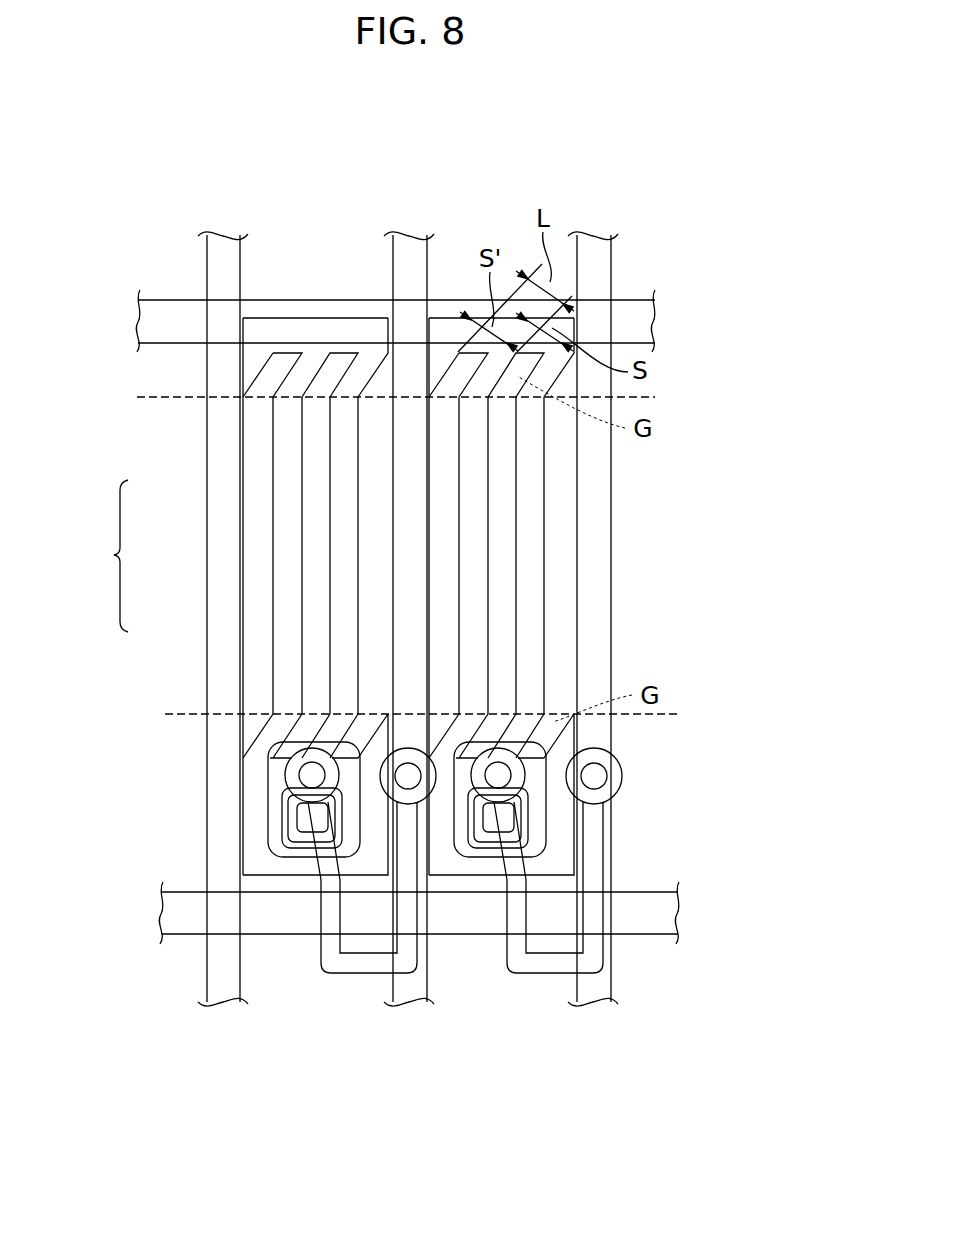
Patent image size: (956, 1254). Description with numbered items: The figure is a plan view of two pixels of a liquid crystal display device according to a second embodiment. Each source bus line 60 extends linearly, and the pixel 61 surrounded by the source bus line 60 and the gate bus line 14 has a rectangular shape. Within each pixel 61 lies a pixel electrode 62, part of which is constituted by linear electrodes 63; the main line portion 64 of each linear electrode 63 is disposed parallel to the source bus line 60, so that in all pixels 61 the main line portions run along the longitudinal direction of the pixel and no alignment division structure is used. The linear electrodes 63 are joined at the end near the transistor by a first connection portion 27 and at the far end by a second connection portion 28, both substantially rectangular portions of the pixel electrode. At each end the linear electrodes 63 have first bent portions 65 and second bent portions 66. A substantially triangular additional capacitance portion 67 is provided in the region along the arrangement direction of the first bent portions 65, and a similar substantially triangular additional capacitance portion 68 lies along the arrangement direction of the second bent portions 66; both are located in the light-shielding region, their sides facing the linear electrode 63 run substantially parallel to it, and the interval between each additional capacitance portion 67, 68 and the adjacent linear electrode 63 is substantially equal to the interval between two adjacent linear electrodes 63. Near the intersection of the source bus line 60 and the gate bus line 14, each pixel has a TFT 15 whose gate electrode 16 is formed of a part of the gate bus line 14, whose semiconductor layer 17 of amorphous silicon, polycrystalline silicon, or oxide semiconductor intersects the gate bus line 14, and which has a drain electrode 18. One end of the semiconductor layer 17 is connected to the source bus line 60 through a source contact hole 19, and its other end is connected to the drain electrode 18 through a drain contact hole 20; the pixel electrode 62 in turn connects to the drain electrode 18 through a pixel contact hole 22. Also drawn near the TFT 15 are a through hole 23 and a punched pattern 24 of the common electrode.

The gate bus line 14 is at (138, 320).
The TFT 15 is at (360, 1003).
The gate electrode 16 is at (328, 912).
The semiconductor layer 17 is at (350, 965).
The drain electrode 18 is at (277, 763).
The source contact hole 19 is at (603, 775).
The drain contact hole 20 is at (303, 777).
The pixel contact hole 22 is at (303, 815).
The through hole 23 is at (292, 825).
The punched pattern of the common electrode 24 is at (285, 845).
The first connection portion 27 is at (363, 865).
The second connection portion 28 is at (314, 322).
The source bus line 60 is at (222, 235).
The pixel 61 is at (320, 227).
The pixel electrode 62 is at (290, 318).
The linear electrode 63 is at (311, 614).
The main line portion 64 is at (280, 555).
The first bent portion 65 is at (265, 740).
The second bent portion 66 is at (293, 380).
The additional capacitance portion 67 is at (380, 722).
The additional capacitance portion 68 is at (247, 372).